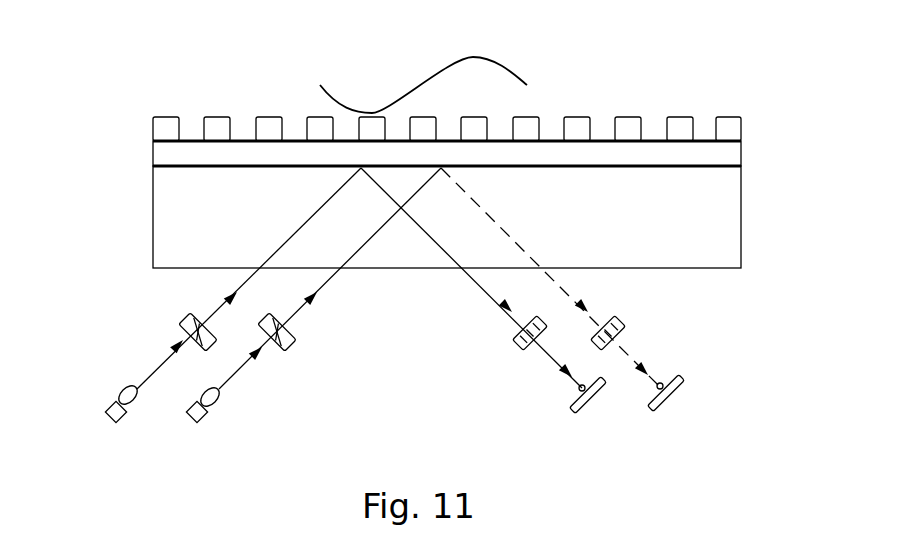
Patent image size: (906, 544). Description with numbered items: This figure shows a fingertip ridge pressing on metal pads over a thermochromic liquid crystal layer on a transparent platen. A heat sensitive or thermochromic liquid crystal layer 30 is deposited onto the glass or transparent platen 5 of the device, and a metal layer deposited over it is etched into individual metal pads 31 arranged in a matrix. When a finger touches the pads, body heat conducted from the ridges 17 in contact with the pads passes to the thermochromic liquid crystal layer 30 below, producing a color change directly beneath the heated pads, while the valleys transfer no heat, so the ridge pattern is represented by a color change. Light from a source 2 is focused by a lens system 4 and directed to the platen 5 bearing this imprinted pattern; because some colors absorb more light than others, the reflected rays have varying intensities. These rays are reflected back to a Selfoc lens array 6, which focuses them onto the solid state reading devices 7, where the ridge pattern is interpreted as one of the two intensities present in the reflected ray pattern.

The light source 2 is at (170, 396).
The lens system 4 is at (234, 333).
The glass or transparent platen 5 is at (479, 217).
The Selfoc lens array 6 is at (566, 333).
The solid state reading devices 7 is at (607, 374).
The ridges 17 is at (459, 57).
The thermochromic liquid crystal layer 30 is at (486, 128).
The metal pads 31 is at (486, 98).